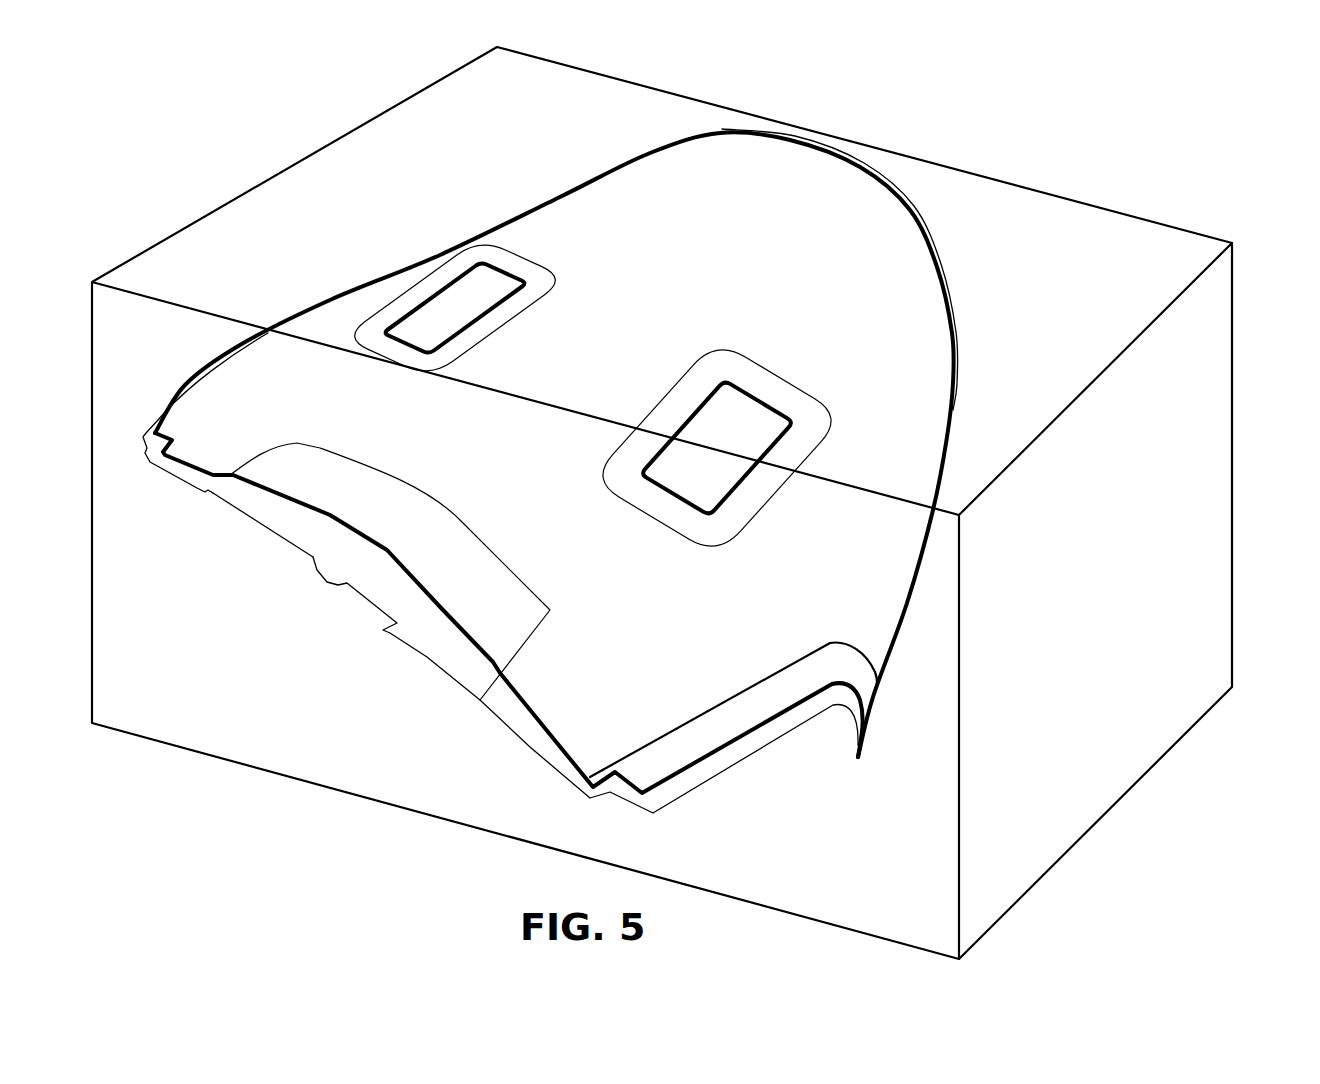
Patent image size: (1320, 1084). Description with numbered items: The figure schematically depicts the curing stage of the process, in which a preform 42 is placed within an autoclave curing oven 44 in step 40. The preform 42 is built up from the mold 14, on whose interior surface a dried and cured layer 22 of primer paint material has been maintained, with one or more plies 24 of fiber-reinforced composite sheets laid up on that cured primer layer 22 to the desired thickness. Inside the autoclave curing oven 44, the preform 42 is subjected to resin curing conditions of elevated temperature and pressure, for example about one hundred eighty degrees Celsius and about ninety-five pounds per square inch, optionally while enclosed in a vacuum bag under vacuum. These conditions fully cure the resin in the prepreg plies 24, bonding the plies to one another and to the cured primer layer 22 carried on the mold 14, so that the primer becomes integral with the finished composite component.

The mold 14 is at (922, 218).
The dried and cured layer of primer paint material 22 is at (385, 557).
The plies of fiber-reinforced composite sheets 24 is at (426, 627).
The step 40 is at (230, 136).
The preform 42 is at (228, 514).
The autoclave curing oven 44 is at (1205, 437).